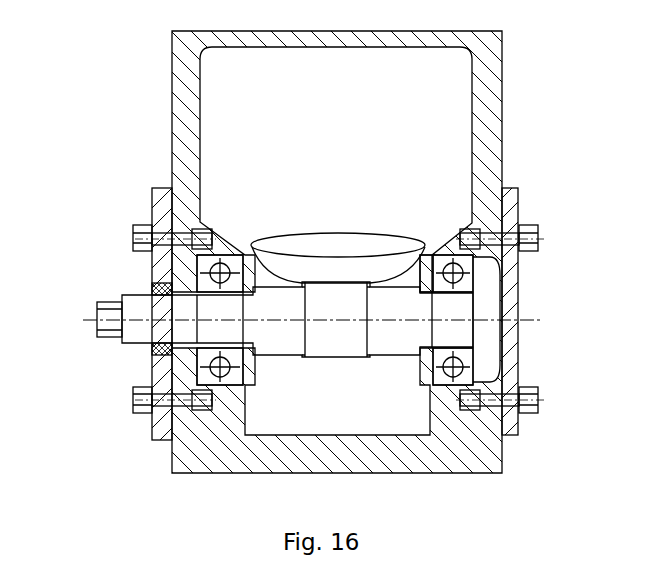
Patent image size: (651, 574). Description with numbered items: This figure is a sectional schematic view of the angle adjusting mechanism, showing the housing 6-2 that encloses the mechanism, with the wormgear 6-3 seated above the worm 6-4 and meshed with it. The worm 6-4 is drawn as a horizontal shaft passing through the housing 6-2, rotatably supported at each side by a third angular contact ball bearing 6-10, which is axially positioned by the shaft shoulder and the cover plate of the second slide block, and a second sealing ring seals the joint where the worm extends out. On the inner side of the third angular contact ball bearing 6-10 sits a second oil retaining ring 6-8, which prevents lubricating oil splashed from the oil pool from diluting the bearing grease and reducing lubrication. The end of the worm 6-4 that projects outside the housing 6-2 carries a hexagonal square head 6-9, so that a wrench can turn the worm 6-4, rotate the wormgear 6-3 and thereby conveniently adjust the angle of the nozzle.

The housing 6-2 is at (173, 86).
The wormgear 6-3 is at (357, 267).
The worm 6-4 is at (158, 315).
The second oil retaining ring 6-8 is at (463, 337).
The hexagonal square head 6-9 is at (110, 333).
The third angular contact ball bearing 6-10 is at (435, 257).